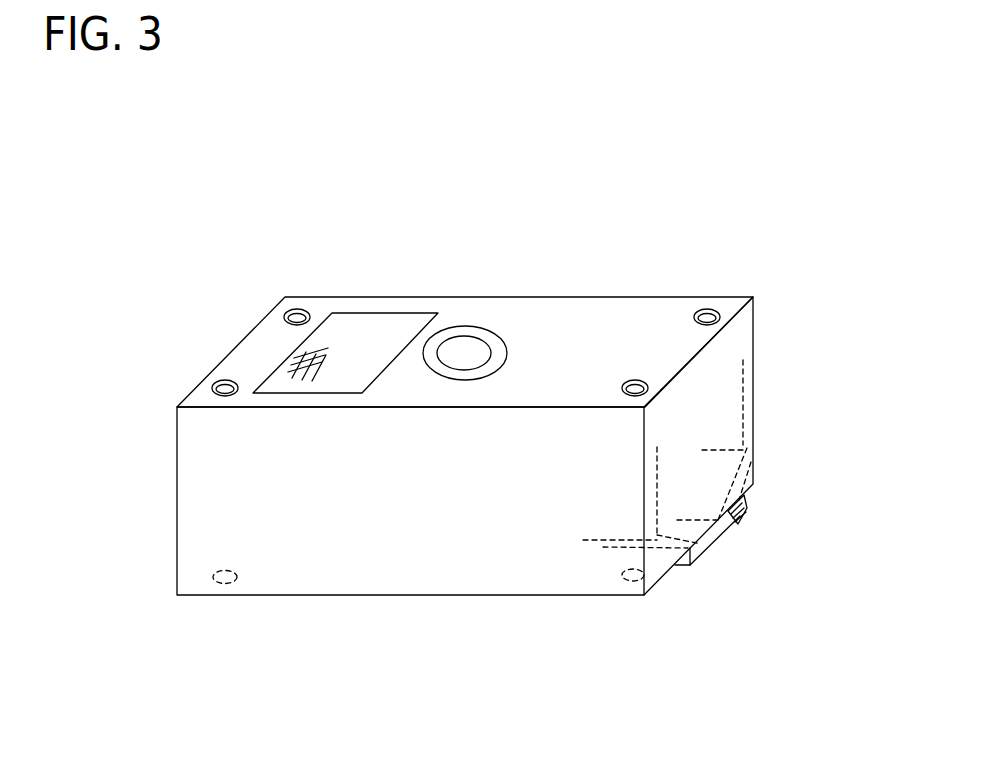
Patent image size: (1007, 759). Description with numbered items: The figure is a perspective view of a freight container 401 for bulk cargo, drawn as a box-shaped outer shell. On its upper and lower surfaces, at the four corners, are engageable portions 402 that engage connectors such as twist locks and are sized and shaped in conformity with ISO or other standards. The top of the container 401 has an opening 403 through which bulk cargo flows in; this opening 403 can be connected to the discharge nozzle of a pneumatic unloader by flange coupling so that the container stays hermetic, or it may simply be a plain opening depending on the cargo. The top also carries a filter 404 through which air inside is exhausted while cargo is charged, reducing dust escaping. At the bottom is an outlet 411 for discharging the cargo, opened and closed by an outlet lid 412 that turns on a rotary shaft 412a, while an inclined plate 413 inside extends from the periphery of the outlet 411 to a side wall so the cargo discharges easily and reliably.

The container 401 is at (717, 207).
The engageable portions 402 is at (707, 311).
The opening 403 is at (474, 348).
The filter 404 is at (373, 327).
The outlet 411 is at (698, 518).
The outlet lid 412 is at (722, 535).
The rotary shaft 412a is at (740, 514).
The inclined plate 413 is at (755, 484).